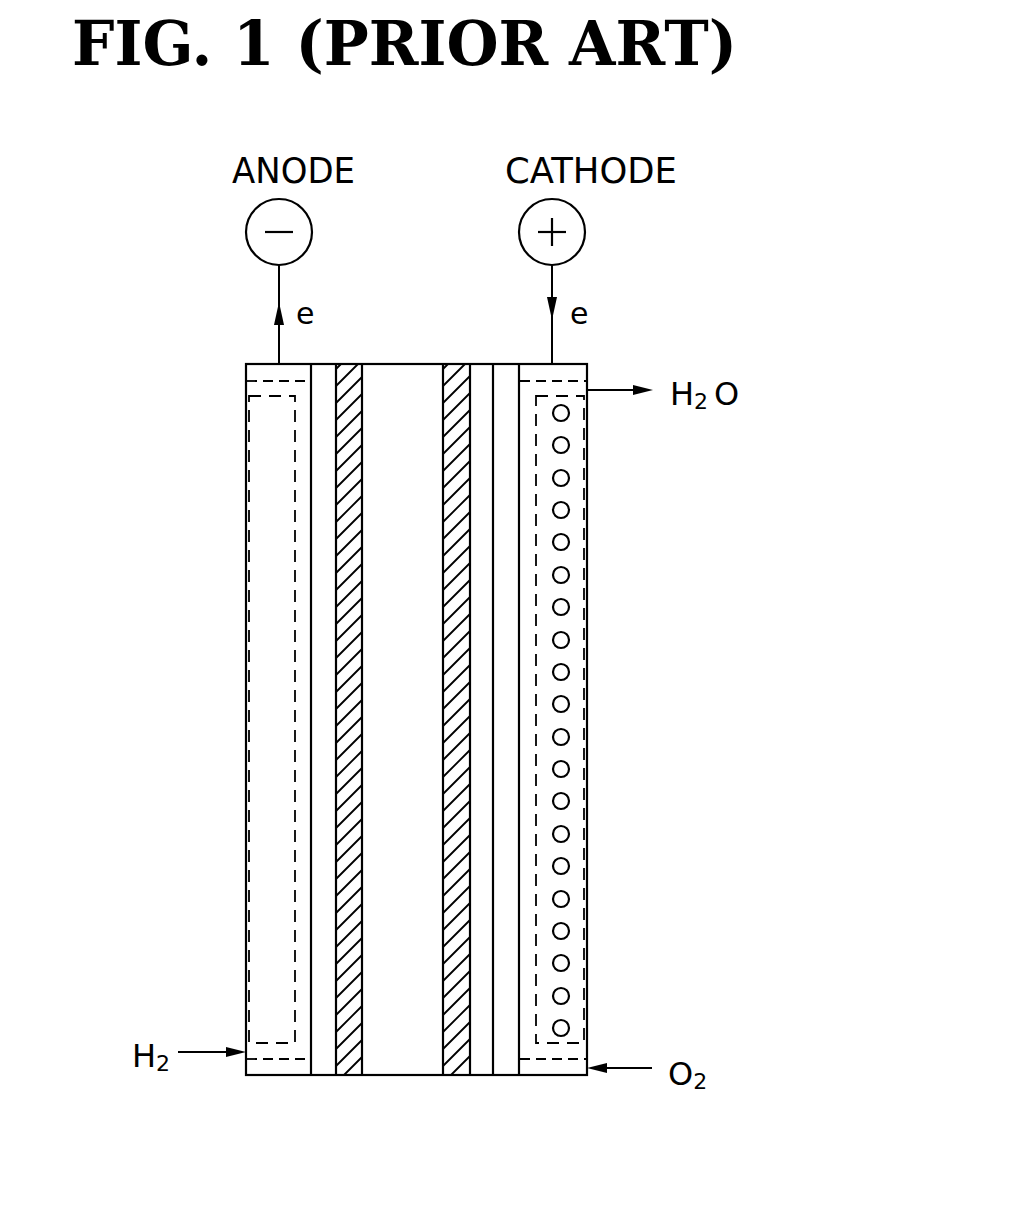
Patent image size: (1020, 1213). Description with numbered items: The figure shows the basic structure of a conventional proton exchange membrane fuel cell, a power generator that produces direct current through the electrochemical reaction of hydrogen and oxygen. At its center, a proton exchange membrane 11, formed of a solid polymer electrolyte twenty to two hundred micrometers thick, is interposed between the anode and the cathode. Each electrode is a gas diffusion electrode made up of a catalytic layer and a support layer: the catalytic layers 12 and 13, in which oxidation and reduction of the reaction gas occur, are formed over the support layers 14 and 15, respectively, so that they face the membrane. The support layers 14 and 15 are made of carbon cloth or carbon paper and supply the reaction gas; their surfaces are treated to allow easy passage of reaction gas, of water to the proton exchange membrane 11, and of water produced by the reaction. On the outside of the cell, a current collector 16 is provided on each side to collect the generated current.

The proton exchange membrane 11 is at (398, 1060).
The catalytic layer 12 is at (342, 1060).
The catalytic layer 13 is at (458, 1060).
The support layer 14 is at (320, 695).
The support layer 15 is at (478, 530).
The current collector 16 is at (262, 768).